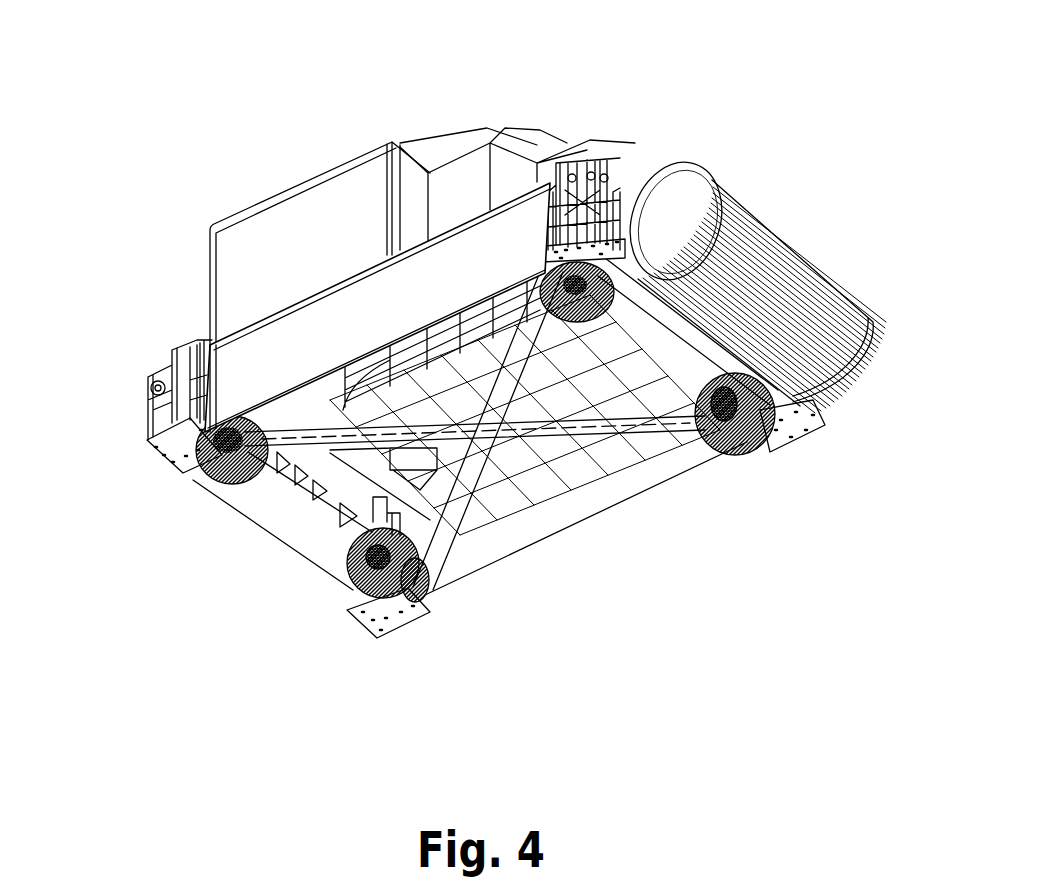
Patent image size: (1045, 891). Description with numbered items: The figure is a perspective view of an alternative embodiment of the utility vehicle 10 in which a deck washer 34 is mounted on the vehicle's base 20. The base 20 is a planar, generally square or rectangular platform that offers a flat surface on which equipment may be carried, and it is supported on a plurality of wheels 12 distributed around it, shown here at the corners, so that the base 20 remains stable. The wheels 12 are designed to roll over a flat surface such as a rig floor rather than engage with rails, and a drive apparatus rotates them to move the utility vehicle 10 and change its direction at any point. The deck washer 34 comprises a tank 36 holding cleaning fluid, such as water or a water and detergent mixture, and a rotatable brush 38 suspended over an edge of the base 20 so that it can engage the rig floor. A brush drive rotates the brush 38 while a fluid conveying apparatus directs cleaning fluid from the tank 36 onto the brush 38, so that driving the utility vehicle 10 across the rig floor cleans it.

The utility vehicle 10 is at (447, 138).
The wheels 12 is at (607, 277).
The base 20 is at (263, 350).
The deck washer 34 is at (503, 122).
The tank 36 is at (285, 215).
The rotatable brush 38 is at (842, 347).